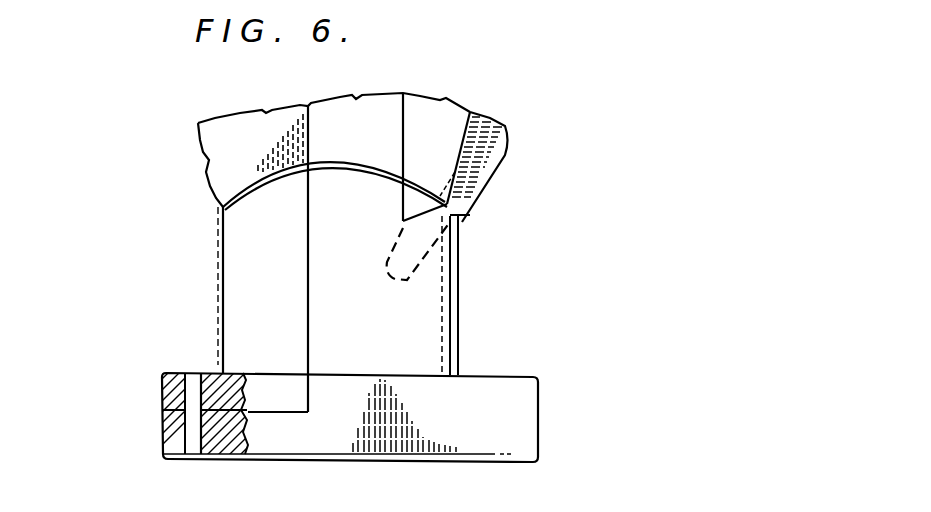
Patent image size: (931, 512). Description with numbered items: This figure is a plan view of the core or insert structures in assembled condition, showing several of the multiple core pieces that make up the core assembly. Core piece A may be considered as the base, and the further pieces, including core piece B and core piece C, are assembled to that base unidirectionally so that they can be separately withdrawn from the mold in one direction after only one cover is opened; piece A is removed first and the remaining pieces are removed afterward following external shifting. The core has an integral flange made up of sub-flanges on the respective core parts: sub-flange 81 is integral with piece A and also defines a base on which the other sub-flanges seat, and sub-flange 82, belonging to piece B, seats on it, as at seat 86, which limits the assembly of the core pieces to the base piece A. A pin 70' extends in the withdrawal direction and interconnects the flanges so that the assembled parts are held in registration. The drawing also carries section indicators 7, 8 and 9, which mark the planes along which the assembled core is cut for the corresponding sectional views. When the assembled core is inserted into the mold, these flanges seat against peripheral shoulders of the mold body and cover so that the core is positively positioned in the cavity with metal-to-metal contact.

The core piece A is at (378, 346).
The core piece B is at (263, 284).
The core piece C is at (507, 158).
The sub-flange 81 is at (267, 433).
The sub-flange 82 is at (162, 376).
The seat 86 is at (214, 370).
The pin 70' is at (129, 413).
The section line 7- 7 is at (70, 62).
The section line 8- 8 is at (735, 68).
The section line 9- 9 is at (145, 250).